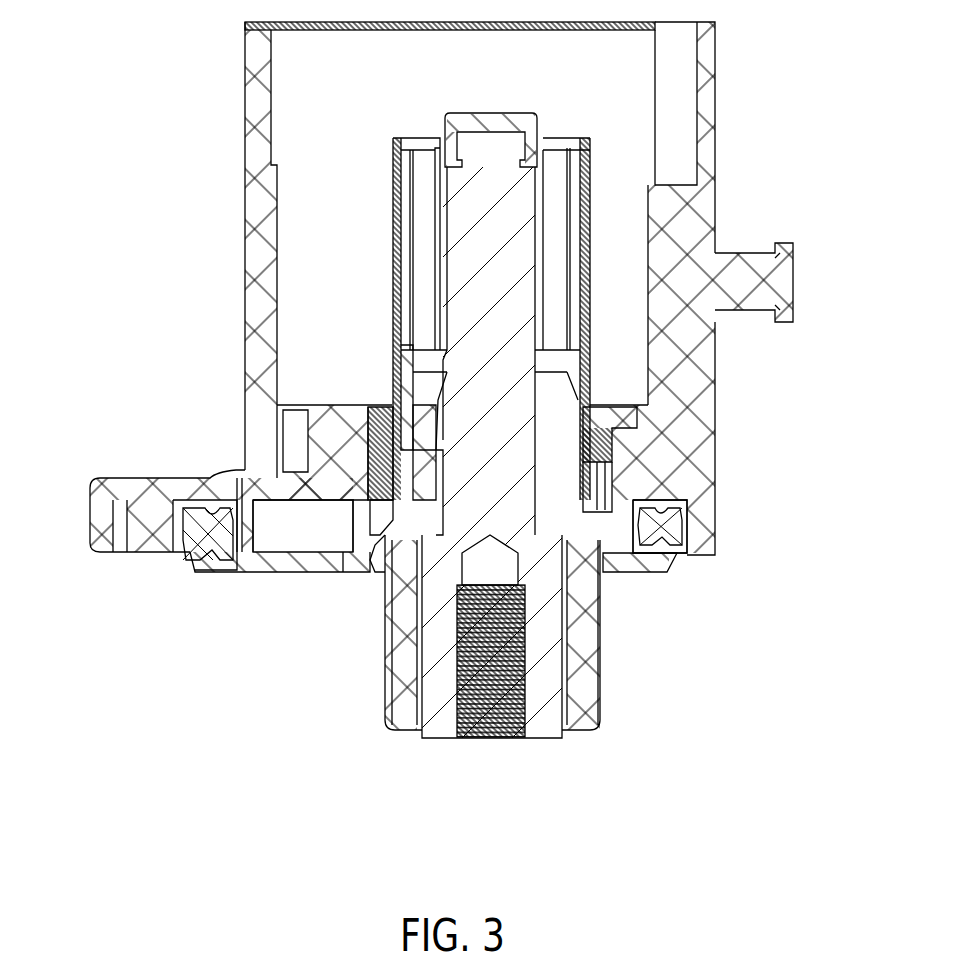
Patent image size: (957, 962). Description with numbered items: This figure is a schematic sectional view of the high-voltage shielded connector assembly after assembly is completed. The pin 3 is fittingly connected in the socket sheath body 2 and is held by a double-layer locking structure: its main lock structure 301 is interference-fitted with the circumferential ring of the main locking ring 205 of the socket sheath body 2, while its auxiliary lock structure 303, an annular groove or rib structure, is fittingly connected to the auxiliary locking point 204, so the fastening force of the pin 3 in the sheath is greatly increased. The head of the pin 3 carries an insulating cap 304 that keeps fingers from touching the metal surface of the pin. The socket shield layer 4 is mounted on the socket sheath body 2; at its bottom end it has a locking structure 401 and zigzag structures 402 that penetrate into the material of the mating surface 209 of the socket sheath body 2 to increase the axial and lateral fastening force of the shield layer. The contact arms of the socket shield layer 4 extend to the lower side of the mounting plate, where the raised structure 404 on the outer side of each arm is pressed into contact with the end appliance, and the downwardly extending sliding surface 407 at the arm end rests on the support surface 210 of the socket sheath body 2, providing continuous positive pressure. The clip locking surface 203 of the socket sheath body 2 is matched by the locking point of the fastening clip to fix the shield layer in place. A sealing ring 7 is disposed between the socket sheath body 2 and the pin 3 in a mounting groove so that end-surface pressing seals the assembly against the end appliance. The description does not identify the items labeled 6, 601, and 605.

The socket sheath body 2 is at (275, 108).
The pin 3 is at (450, 238).
The socket shield layer 4 is at (393, 280).
The sealing assembly 6 is at (372, 412).
The sealing ring 7 is at (182, 562).
The clip locking surface 203 is at (340, 555).
The auxiliary locking point 204 is at (605, 576).
The main locking ring 205 is at (615, 443).
The mating surface 209 is at (395, 385).
The support surface 210 is at (383, 678).
The main lock structure 301 is at (590, 403).
The auxiliary lock structure 303 is at (605, 570).
The insulating cap 304 is at (523, 116).
The locking structure 401 is at (612, 514).
The zigzag structure 402 is at (395, 408).
The raised structure 404 is at (372, 570).
The sliding surface 407 is at (380, 627).
The first seal 601 is at (380, 466).
The second seal 605 is at (650, 500).